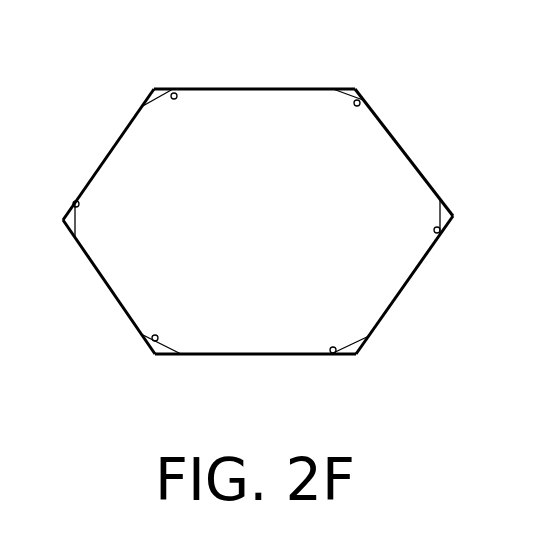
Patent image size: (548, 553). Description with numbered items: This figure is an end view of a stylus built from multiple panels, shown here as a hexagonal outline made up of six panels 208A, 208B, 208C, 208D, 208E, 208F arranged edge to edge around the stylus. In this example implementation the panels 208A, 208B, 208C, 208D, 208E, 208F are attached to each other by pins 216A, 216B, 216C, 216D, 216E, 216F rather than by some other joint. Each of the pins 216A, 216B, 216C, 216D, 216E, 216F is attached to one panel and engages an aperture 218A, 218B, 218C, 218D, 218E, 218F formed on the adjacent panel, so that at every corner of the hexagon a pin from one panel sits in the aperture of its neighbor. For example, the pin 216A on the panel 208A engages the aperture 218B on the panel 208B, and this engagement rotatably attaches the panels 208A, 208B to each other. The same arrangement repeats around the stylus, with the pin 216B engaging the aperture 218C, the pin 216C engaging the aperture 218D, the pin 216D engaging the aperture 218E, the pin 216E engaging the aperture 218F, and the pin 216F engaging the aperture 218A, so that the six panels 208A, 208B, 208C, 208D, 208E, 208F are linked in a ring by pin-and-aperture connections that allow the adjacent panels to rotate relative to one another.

The panel 208A is at (261, 89).
The panel 208B is at (409, 160).
The panel 208C is at (395, 298).
The panel 208D is at (263, 354).
The panel 208E is at (113, 291).
The panel 208F is at (104, 161).
The pin 216A is at (333, 90).
The pin 216B is at (441, 208).
The pin 216C is at (339, 348).
The pin 216D is at (181, 352).
The pin 216E is at (78, 230).
The pin 216F is at (171, 95).
The aperture 218A is at (176, 97).
The aperture 218B is at (356, 105).
The aperture 218C is at (434, 232).
The aperture 218D is at (330, 350).
The aperture 218E is at (156, 337).
The aperture 218F is at (79, 203).